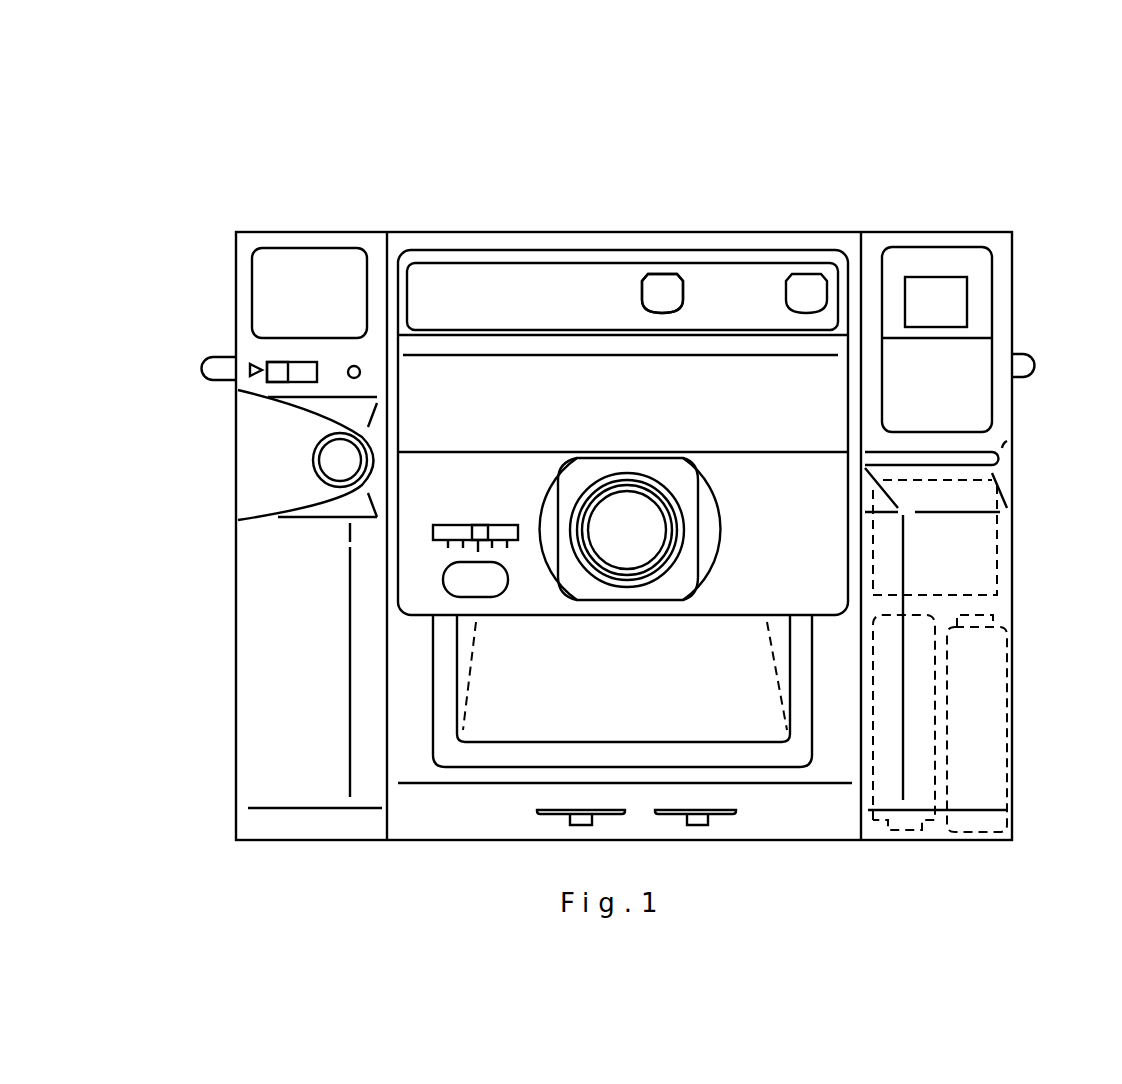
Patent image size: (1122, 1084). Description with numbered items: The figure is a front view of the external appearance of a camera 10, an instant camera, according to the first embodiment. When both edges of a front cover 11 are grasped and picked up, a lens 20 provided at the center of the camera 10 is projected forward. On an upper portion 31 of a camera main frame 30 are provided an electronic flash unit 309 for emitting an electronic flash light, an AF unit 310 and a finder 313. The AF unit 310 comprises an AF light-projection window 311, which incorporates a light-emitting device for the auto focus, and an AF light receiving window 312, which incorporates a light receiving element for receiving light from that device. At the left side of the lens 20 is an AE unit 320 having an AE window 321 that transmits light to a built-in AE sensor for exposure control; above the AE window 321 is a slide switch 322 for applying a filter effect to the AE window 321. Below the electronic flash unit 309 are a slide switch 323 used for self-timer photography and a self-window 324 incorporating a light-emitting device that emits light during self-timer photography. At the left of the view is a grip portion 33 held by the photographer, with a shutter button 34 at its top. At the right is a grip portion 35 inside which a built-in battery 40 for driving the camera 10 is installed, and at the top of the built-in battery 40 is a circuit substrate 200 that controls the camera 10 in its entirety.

The camera 10 is at (652, 74).
The front cover 11 is at (800, 408).
The lens 20 is at (642, 537).
The camera main frame 30 is at (934, 194).
The upper portion 31 is at (587, 240).
The grip portion 33 is at (278, 642).
The shutter button 34 is at (333, 460).
The grip portion 35 is at (987, 558).
The built-in battery 40 is at (968, 732).
The circuit substrate 200 is at (980, 500).
The electronic flash unit 309 is at (300, 278).
The AF unit 310 is at (737, 157).
The AF light-projection window 311 is at (662, 273).
The AF light receiving window 312 is at (807, 273).
The finder 313 is at (942, 292).
The AE unit 320 is at (495, 637).
The AE window 321 is at (488, 597).
The slide switch 322 is at (490, 525).
The slide switch 323 is at (268, 362).
The self-window 324 is at (354, 366).